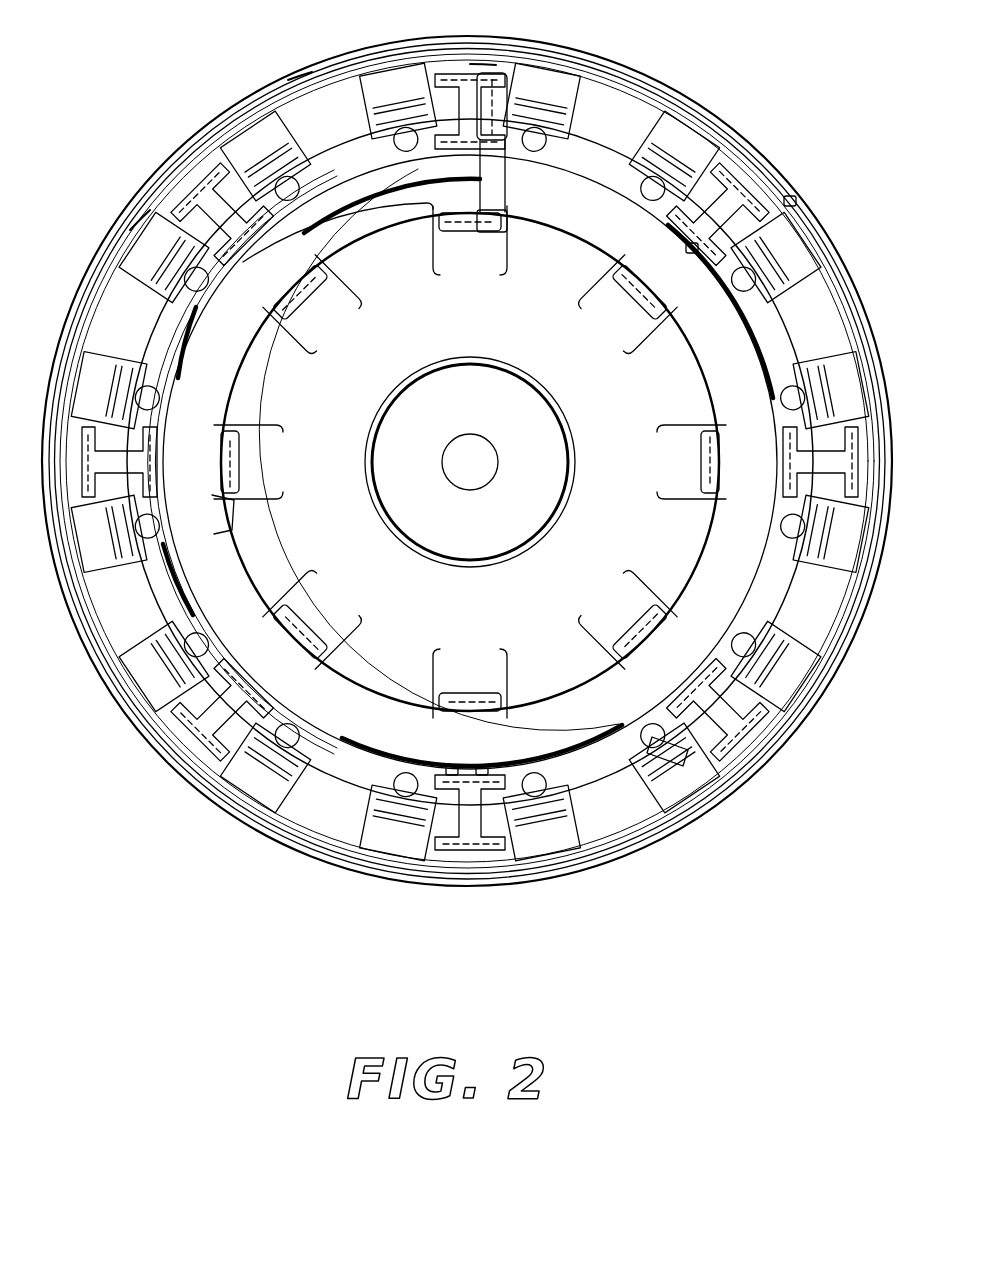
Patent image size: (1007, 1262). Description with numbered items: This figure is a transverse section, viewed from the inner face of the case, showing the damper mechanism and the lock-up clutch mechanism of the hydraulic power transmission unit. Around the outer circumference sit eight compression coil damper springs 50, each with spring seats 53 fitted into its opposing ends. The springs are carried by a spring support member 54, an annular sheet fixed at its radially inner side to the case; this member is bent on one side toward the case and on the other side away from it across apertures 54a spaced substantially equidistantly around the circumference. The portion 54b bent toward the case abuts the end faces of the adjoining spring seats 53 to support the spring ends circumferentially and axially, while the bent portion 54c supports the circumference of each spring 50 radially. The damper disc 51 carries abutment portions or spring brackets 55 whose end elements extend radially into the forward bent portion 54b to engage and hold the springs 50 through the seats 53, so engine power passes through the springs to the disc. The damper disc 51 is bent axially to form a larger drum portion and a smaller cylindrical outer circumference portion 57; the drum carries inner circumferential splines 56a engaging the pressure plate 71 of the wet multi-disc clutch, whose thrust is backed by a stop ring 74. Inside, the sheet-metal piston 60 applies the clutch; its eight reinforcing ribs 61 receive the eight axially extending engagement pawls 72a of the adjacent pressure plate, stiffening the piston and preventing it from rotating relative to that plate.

The damper springs 50 is at (535, 58).
The damper disc 51 is at (765, 178).
The spring seats 53 is at (570, 76).
The spring support member 54 is at (358, 182).
The apertures 54a is at (390, 62).
The portion bent toward the case portion 54b is at (470, 66).
The bent portion bent away from the case portion 54c is at (300, 76).
The abutment portions (spring brackets) 55 is at (792, 202).
The inner circumferential splines 56a is at (548, 190).
The cylindrical outer circumference portion 57 is at (660, 738).
The piston 60 is at (333, 544).
The rib 61 is at (532, 276).
The pressure plate 71 is at (676, 262).
The engagement pawls 72a is at (630, 306).
The stop ring 74 is at (760, 348).